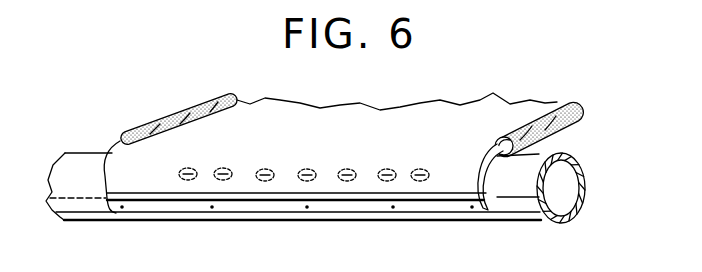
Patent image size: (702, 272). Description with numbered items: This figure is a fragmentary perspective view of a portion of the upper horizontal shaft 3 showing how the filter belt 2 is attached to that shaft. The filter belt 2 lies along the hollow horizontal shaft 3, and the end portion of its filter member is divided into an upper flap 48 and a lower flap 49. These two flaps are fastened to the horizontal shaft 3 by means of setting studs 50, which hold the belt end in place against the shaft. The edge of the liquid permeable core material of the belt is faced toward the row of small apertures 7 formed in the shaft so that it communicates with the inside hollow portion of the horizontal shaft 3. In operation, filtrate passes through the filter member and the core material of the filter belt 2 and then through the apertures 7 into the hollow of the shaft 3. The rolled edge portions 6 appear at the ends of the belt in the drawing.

The filter belt 2 is at (301, 124).
The upper horizontal shaft 3 is at (525, 223).
The rolled edge bead 6 is at (193, 110).
The small apertures 7 is at (223, 170).
The upper flap 48 is at (368, 193).
The lower flap 49 is at (538, 151).
The setting studs 50 is at (212, 208).